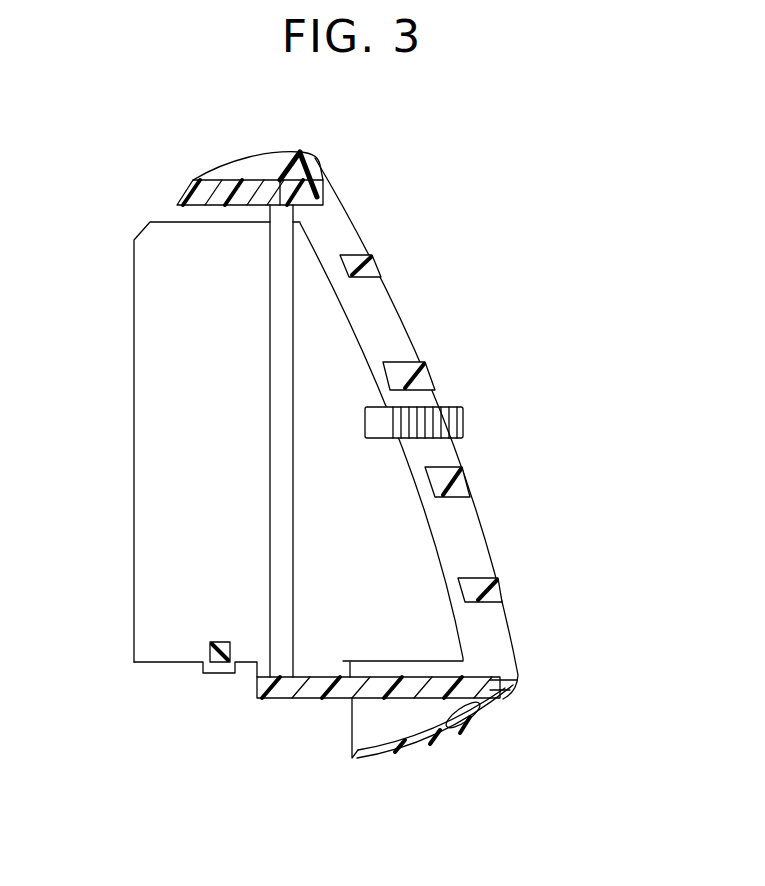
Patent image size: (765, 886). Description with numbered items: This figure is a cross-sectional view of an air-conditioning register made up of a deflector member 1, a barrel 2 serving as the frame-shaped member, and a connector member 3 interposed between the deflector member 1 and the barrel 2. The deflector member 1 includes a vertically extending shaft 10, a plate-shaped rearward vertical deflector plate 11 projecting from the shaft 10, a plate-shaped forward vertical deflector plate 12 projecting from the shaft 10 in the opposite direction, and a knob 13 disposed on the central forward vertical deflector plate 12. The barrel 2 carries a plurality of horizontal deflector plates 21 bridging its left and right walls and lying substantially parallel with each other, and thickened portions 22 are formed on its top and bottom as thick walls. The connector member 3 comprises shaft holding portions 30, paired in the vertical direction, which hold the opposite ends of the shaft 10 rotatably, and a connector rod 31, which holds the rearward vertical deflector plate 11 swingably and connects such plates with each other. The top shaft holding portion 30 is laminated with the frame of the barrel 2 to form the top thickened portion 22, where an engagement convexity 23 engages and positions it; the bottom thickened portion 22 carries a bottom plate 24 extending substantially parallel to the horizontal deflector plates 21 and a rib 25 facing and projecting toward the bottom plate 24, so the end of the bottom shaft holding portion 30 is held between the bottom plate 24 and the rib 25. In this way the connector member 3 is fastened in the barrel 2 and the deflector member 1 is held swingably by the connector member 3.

The deflector member 1 is at (324, 441).
The barrel 2 is at (413, 454).
The connector member 3 is at (282, 477).
The shaft 10 is at (275, 268).
The rearward vertical deflector plate 11 is at (143, 396).
The forward vertical deflector plate 12 is at (405, 540).
The knob 13 is at (465, 421).
The horizontal deflector plate 21 is at (375, 263).
The thickened portion 22 is at (277, 150).
The engagement convexity 23 is at (338, 195).
The bottom plate 24 is at (500, 672).
The rib 25 is at (448, 745).
The shaft holding portion 30 is at (185, 190).
The connector rod 31 is at (220, 673).